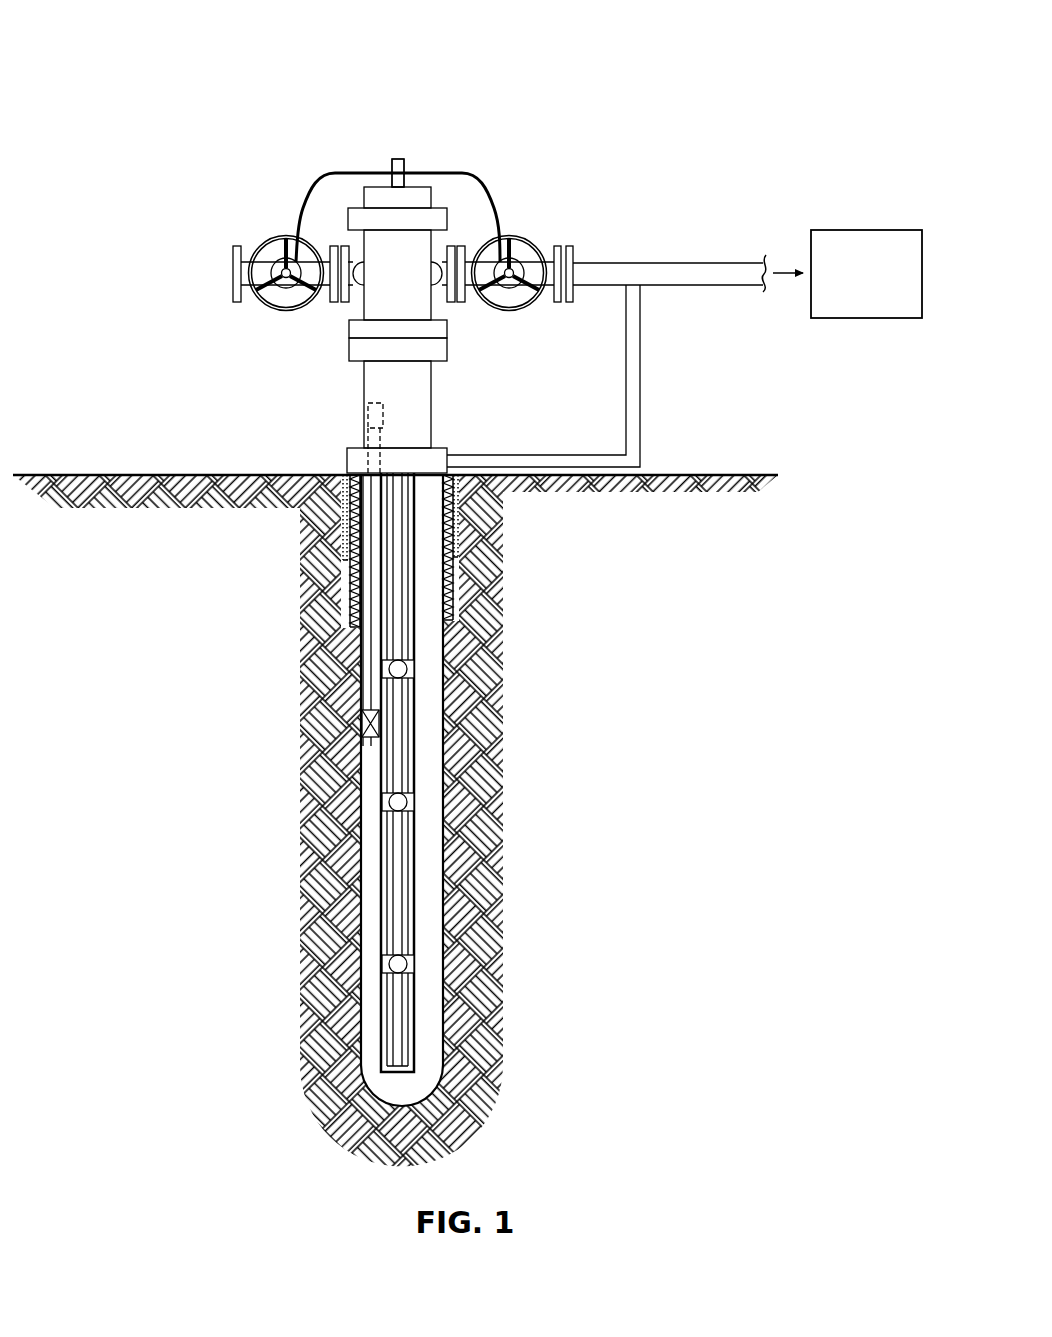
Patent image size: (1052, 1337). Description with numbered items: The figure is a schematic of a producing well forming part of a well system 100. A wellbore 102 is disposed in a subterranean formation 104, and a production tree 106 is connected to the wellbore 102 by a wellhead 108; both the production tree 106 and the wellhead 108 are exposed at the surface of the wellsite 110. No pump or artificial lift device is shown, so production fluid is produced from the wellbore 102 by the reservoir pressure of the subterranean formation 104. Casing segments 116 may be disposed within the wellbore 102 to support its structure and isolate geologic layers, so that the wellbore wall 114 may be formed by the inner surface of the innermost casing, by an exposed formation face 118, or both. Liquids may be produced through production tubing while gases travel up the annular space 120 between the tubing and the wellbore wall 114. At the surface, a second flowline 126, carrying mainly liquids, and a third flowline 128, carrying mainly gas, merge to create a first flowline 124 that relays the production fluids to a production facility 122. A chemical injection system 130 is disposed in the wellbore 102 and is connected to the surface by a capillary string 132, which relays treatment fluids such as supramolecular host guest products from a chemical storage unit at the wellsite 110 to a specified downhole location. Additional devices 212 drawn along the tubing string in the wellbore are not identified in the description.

The well system 100 is at (110, 40).
The wellbore 102 is at (445, 668).
The subterranean formation 104 is at (650, 563).
The production tree 106 is at (367, 300).
The wellhead 108 is at (423, 388).
The wellsite 110 is at (308, 445).
The wellbore wall 114 is at (447, 712).
The casing segments 116 is at (455, 601).
The exposed formation face 118 is at (447, 770).
The annular space 120 is at (450, 614).
The production facility 122 is at (844, 288).
The first flowline 124 is at (727, 250).
The second flowline 126 is at (605, 262).
The third flowline 128 is at (641, 375).
The chemical injection system 130 is at (365, 727).
The capillary string 132 is at (372, 598).
The ball valves / flow control devices 212 is at (420, 852).